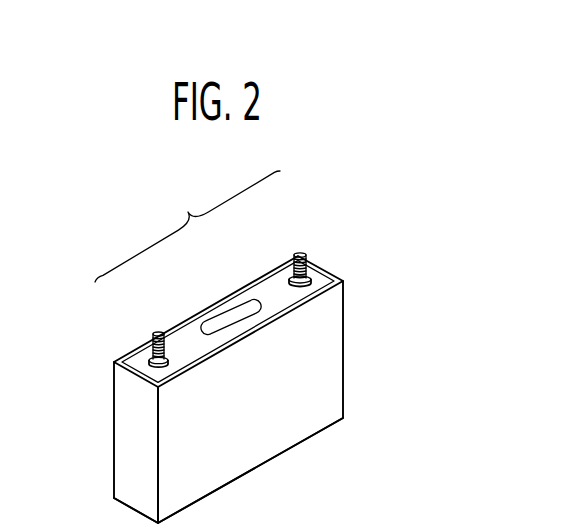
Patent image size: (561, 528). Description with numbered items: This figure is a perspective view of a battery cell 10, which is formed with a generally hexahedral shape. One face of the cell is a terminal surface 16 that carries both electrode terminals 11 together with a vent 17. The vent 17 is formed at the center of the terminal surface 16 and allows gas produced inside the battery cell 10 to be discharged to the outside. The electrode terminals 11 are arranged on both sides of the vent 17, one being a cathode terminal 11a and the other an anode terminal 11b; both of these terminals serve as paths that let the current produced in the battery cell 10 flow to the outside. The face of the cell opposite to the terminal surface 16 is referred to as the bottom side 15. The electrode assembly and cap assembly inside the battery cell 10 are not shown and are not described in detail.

The battery cell 10 is at (347, 351).
The electrode terminals 11 is at (187, 226).
The cathode terminal 11a is at (157, 333).
The anode terminal 11b is at (302, 253).
The bottom side 15 is at (253, 469).
The terminal surface 16 is at (317, 282).
The vent 17 is at (228, 318).